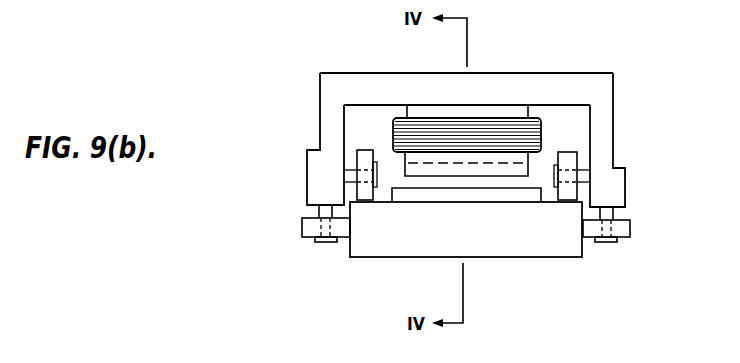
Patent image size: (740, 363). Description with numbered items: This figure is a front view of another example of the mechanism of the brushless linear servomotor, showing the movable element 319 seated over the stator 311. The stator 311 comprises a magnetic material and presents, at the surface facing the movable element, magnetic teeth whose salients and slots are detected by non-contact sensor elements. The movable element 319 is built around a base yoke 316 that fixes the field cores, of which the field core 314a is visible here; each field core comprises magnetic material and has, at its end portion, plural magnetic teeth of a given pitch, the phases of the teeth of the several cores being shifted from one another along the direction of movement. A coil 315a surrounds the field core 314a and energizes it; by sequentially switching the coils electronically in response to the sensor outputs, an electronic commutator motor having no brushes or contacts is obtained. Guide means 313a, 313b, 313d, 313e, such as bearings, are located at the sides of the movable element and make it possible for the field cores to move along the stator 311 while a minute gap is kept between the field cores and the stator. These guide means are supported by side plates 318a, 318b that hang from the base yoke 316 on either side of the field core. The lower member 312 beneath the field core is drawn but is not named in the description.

The stator 311 is at (493, 248).
The mounting plate 312 is at (413, 195).
The guide means 313a is at (362, 158).
The guide means 313b is at (308, 229).
The guide means 313d is at (622, 230).
The guide means 313e is at (570, 155).
The field core 314a is at (500, 162).
The coil 315a is at (395, 118).
The base yoke 316 is at (485, 87).
The side plate 318a is at (332, 102).
The side plate 318b is at (605, 90).
The movable element 319 is at (565, 72).